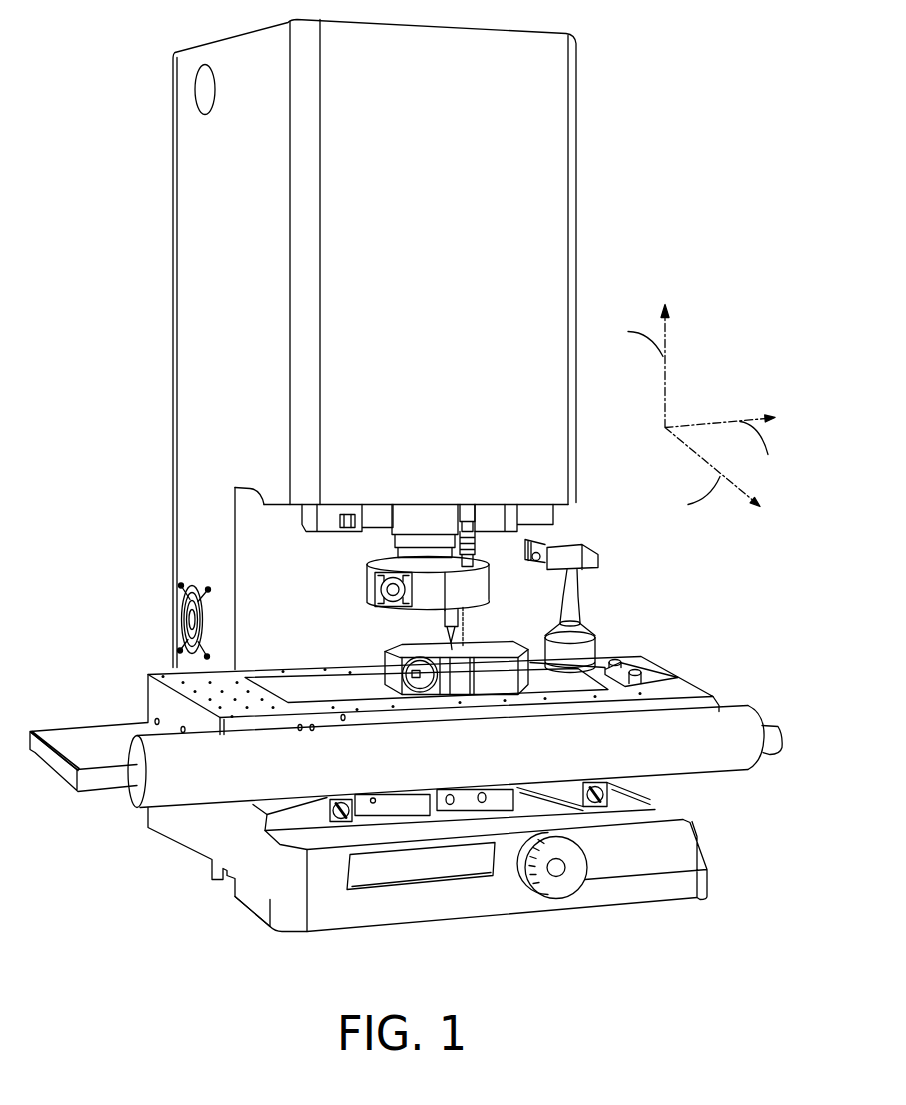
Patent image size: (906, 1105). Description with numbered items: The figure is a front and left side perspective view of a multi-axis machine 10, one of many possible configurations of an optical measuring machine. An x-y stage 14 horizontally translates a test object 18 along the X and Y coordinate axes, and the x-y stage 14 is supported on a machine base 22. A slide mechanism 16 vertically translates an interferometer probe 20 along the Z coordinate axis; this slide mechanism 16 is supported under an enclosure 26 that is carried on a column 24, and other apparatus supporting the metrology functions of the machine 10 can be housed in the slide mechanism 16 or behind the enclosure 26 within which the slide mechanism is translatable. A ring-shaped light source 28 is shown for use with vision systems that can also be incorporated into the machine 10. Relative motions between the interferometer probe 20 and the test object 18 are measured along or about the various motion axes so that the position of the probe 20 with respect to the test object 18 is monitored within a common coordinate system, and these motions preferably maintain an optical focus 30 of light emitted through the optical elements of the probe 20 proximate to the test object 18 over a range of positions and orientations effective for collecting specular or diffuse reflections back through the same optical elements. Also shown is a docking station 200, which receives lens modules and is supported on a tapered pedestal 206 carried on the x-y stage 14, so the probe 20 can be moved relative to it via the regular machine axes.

The multi-axis machine 10 is at (407, 476).
The x-y stage 14 is at (184, 677).
The slide mechanism 16 is at (388, 533).
The test object 18 is at (388, 655).
The interferometer probe 20 is at (461, 613).
The machine base 22 is at (697, 843).
The column 24 is at (217, 304).
The enclosure 26 is at (573, 246).
The ring-shaped light source 28 is at (367, 580).
The optical focus 30 is at (463, 650).
The docking station 200 is at (598, 557).
The tapered pedestal 206 is at (595, 650).